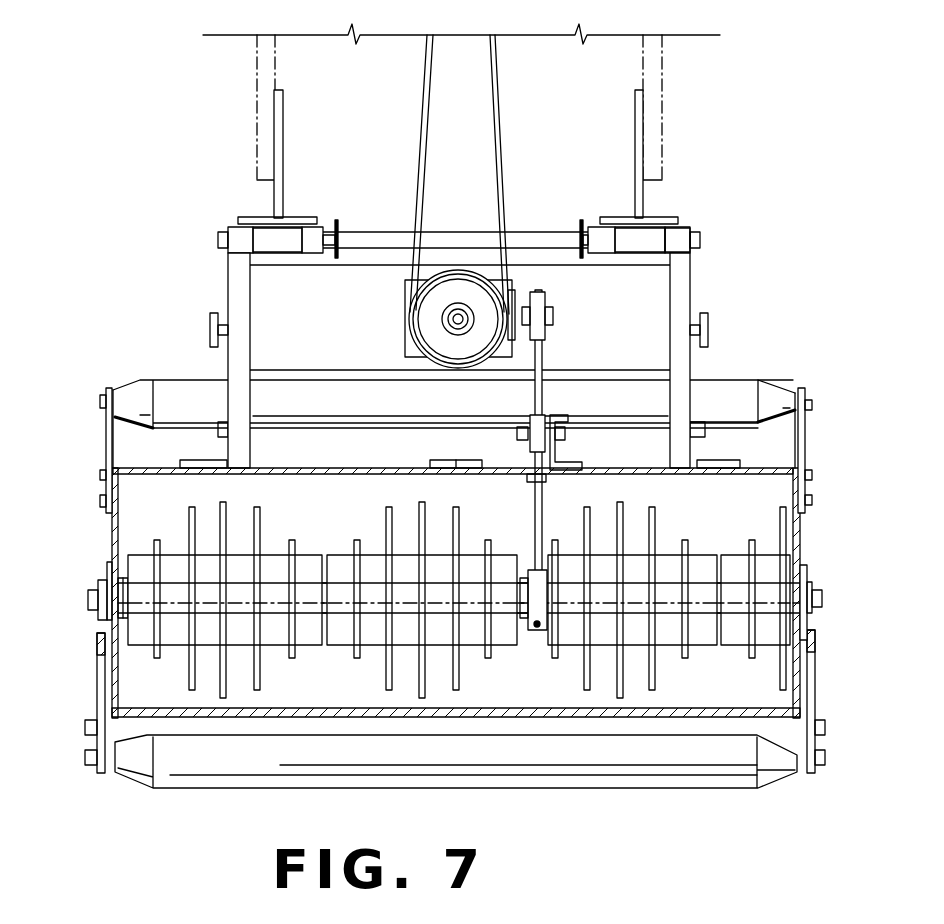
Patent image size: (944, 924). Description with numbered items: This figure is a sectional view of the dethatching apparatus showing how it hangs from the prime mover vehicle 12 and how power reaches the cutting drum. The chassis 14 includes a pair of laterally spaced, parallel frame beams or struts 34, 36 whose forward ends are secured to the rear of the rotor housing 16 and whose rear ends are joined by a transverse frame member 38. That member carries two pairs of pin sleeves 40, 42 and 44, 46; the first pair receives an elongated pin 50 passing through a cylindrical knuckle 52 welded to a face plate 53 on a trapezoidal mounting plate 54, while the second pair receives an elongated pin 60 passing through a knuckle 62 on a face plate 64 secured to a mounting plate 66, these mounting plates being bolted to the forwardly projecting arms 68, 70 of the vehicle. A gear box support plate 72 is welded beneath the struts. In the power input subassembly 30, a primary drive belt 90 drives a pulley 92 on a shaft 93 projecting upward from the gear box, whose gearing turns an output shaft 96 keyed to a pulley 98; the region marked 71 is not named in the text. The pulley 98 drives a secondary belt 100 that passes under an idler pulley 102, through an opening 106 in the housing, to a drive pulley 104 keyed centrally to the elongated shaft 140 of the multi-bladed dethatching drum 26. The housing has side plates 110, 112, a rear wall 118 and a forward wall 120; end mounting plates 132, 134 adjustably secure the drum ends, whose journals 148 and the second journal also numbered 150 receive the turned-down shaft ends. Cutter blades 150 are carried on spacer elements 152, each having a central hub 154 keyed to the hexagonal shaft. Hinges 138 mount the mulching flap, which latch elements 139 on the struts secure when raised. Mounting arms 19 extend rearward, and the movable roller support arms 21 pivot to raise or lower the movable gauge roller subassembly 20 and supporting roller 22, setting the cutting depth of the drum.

The prime mover vehicle 12 is at (591, 84).
The chassis 14 is at (700, 271).
The rotor housing 16 is at (778, 449).
The mounting arms 19 is at (106, 452).
The movable gauge roller subassembly 20 is at (737, 801).
The movable roller support arms 21 is at (105, 700).
The movable roller actuating subassembly 22 is at (361, 756).
The multi-bladed dethatching drum 26 is at (399, 582).
The power input subassembly 30 is at (416, 286).
The frame beam 34 is at (235, 356).
The frame beam 36 is at (683, 365).
The transverse frame member 38 is at (528, 240).
The pin sleeve 40 is at (238, 238).
The pin sleeve 42 is at (320, 232).
The pin sleeve 44 is at (597, 235).
The pin sleeve 46 is at (683, 238).
The elongated pin 50 is at (218, 240).
The cylindrical knuckle 52 is at (275, 250).
The face plate 53 is at (260, 216).
The mounting plate 54 is at (283, 120).
The elongated pin 60 is at (700, 240).
The knuckle 62 is at (648, 245).
The face plate 64 is at (663, 218).
The mounting plate 66 is at (643, 118).
The forwardly projecting arm 68 is at (258, 50).
The forwardly projecting arm 70 is at (660, 80).
The drive coupling 71 is at (612, 329).
The gear box support plate 72 is at (405, 345).
The primary drive belt 90 is at (427, 62).
The pulley 92 is at (460, 288).
The shaft 93 is at (453, 318).
The output shaft 96 is at (556, 318).
The pulley 98 is at (548, 315).
The secondary belt 100 is at (542, 498).
The idler pulley 102 is at (530, 420).
The drive pulley 104 is at (536, 630).
The opening 106 is at (530, 478).
The side plate 110 is at (802, 530).
The side plate 112 is at (117, 540).
The rear wall 118 is at (343, 473).
The forward wall 120 is at (688, 706).
The end mounting plate 132 is at (804, 565).
The end mounting plate 134 is at (222, 425).
The hinges 138 is at (185, 463).
The latch element 139 is at (722, 422).
The elongated shaft 140 is at (822, 596).
The journal 148 is at (812, 610).
The cutter blades 150 is at (657, 525).
The spacer elements 152 is at (340, 580).
The central hub 154 is at (183, 600).